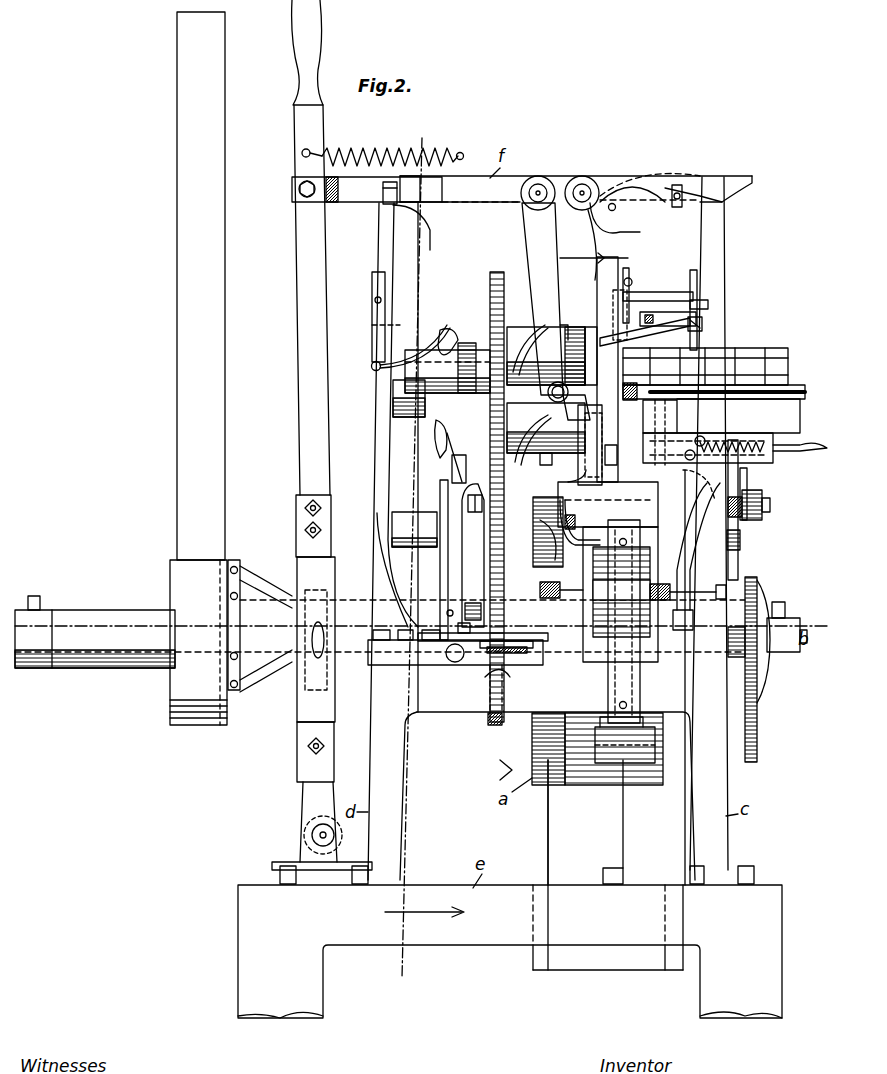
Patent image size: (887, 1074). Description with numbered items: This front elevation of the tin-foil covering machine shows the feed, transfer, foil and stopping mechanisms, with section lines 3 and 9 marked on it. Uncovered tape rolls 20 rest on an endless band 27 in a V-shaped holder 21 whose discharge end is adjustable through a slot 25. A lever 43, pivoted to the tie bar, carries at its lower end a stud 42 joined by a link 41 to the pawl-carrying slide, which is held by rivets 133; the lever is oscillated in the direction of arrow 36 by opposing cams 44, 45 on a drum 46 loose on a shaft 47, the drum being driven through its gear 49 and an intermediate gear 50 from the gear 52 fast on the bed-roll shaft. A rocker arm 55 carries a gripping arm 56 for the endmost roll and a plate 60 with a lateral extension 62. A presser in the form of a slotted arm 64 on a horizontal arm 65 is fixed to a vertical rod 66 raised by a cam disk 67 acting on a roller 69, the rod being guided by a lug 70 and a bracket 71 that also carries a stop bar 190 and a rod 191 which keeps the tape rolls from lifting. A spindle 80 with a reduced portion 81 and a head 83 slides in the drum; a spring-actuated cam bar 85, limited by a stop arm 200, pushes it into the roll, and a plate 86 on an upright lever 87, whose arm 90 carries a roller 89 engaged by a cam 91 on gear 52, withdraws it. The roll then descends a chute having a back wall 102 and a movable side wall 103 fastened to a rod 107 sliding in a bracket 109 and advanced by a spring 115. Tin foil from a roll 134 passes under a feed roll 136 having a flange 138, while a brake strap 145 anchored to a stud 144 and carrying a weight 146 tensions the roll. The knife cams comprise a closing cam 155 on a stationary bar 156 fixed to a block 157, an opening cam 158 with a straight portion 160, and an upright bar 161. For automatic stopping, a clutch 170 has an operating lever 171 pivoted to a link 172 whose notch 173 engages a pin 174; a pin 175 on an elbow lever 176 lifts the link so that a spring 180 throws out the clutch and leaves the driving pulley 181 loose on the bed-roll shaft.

The section line 3— 3 is at (413, 551).
The section line 9— 9 is at (590, 371).
The tape rolls 20 is at (772, 342).
The V-shaped trough or frame 21 is at (800, 387).
The slot 25 is at (698, 540).
The endless band 27 is at (790, 422).
The arrow 36 is at (594, 358).
The link 41 is at (620, 430).
The stud 42 is at (548, 394).
The lever 43 is at (533, 252).
The cam 44 is at (569, 322).
The cam 45 is at (532, 330).
The cam drum or hub 46 is at (482, 320).
The shaft 47 is at (425, 410).
The gear 49 is at (490, 276).
The intermediate gear 50 is at (490, 498).
The gear 52 is at (504, 575).
The rocker arm 55 is at (604, 226).
The gripping arm 56 is at (624, 398).
The plate or bar 60 is at (645, 318).
The lateral arm or extension 62 is at (600, 320).
The slotted arm 64 is at (650, 334).
The horizontal arm 65 is at (702, 320).
The vertically movable rod 66 is at (693, 272).
The cam disk 67 is at (752, 728).
The roller 69 is at (760, 492).
The lug 70 is at (740, 552).
The bracket 71 is at (700, 302).
The spindle 80 is at (472, 352).
The reduced portion 81 is at (557, 355).
The head 83 is at (420, 455).
The spring actuated bar or arm 85 is at (440, 330).
The plate 86 is at (464, 468).
The upright lever 87 is at (446, 572).
The roller 89 is at (451, 609).
The arm 90 is at (476, 600).
The cam 91 is at (477, 555).
The cross plate or wall 102 is at (663, 432).
The movable side wall 103 is at (640, 450).
The rod 107 is at (785, 452).
The bracket 109 is at (740, 445).
The spring 115 is at (760, 445).
The rivets 133 is at (546, 840).
The roll of tin foil 134 is at (605, 636).
The feed roll 136 is at (608, 572).
The flange 138 is at (678, 486).
The stud 144 is at (585, 525).
The brake strap 145 is at (608, 688).
The weight 146 is at (640, 742).
The curved bar 155 is at (540, 528).
The stationary bar 156 is at (448, 664).
The block 157 is at (400, 666).
The curved bar 158 is at (510, 768).
The straight portion 160 is at (488, 676).
The upright bar 161 is at (512, 634).
The clutch or starting device 170 is at (280, 668).
The operating lever 171 is at (296, 378).
The link 172 is at (360, 200).
The notch 173 is at (678, 194).
The pin 174 is at (672, 204).
The pin 175 is at (612, 203).
The elbow lever 176 is at (718, 242).
The spring 180 is at (378, 150).
The driving pulley 181 is at (172, 570).
The stop bar 190 is at (652, 306).
The rod 191 is at (641, 273).
The stop arm 200 is at (374, 370).